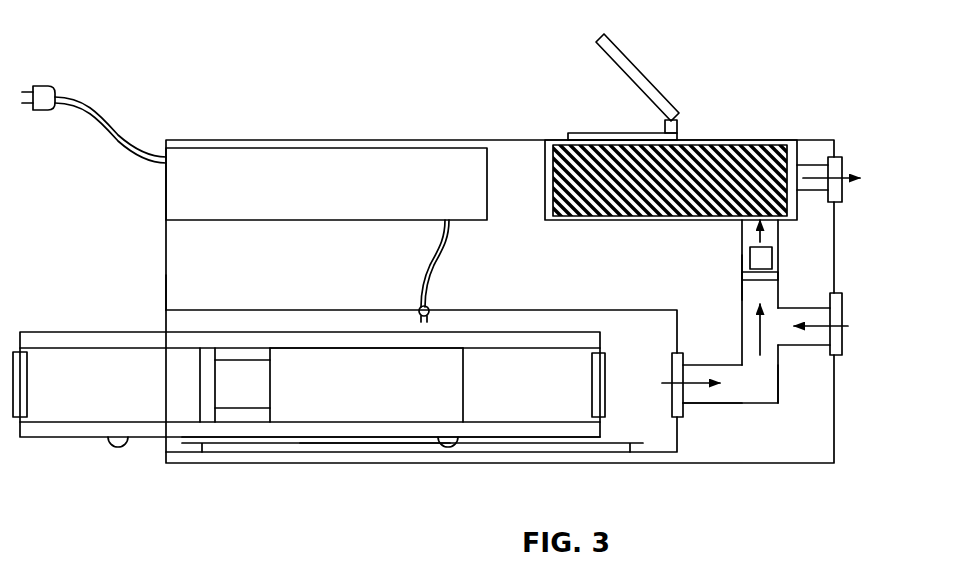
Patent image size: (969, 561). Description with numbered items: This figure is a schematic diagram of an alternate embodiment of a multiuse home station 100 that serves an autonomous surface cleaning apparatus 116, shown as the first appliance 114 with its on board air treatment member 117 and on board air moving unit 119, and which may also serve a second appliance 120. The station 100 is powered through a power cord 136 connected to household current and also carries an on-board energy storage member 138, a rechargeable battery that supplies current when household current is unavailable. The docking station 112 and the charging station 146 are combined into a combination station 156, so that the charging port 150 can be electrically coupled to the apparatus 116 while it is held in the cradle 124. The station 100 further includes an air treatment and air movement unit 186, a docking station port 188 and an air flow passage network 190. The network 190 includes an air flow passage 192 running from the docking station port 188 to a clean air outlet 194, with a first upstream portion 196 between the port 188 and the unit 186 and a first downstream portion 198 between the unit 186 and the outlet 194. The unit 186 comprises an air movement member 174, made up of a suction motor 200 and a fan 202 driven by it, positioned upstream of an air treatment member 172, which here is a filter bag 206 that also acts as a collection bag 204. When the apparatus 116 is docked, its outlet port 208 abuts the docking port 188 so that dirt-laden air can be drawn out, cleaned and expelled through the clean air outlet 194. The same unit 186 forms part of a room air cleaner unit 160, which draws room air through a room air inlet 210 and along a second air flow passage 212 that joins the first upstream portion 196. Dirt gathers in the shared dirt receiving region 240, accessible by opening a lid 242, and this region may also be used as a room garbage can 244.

The multiuse home station 100 is at (210, 60).
The docking station 112 is at (143, 320).
The first appliance 114 is at (307, 447).
The autonomous surface cleaning apparatus 116 is at (375, 443).
The on board air treatment member 117 is at (333, 357).
The on board air moving unit 119 is at (233, 358).
The second appliance 120 is at (657, 293).
The cradle 124 is at (232, 444).
The power cord 136 is at (106, 112).
The on-board energy storage member 138 is at (312, 142).
The charging station 146 is at (405, 297).
The charging port 150 is at (432, 308).
The combination station 156 is at (188, 309).
The room air cleaner unit 160 is at (865, 316).
The air treatment member 172 is at (806, 157).
The air movement member 174 is at (739, 271).
The air treatment and air movement unit 186 is at (859, 210).
The docking station port 188 is at (684, 410).
The air flow passage network 190 is at (800, 399).
The air flow passage 192 is at (714, 364).
The clean air outlet 194 is at (845, 161).
The first upstream portion 196 is at (743, 389).
The first downstream portion 198 is at (748, 236).
The suction motor 200 is at (773, 258).
The fan 202 is at (780, 277).
The collection bag 204 is at (771, 156).
The filter bag 206 is at (738, 145).
The outlet port 208 is at (607, 402).
The room air inlet 210 is at (846, 347).
The second air flow passage 212 is at (803, 348).
The shared dirt receiving region 240 is at (543, 178).
The lid 242 is at (630, 58).
The room garbage can 244 is at (590, 105).